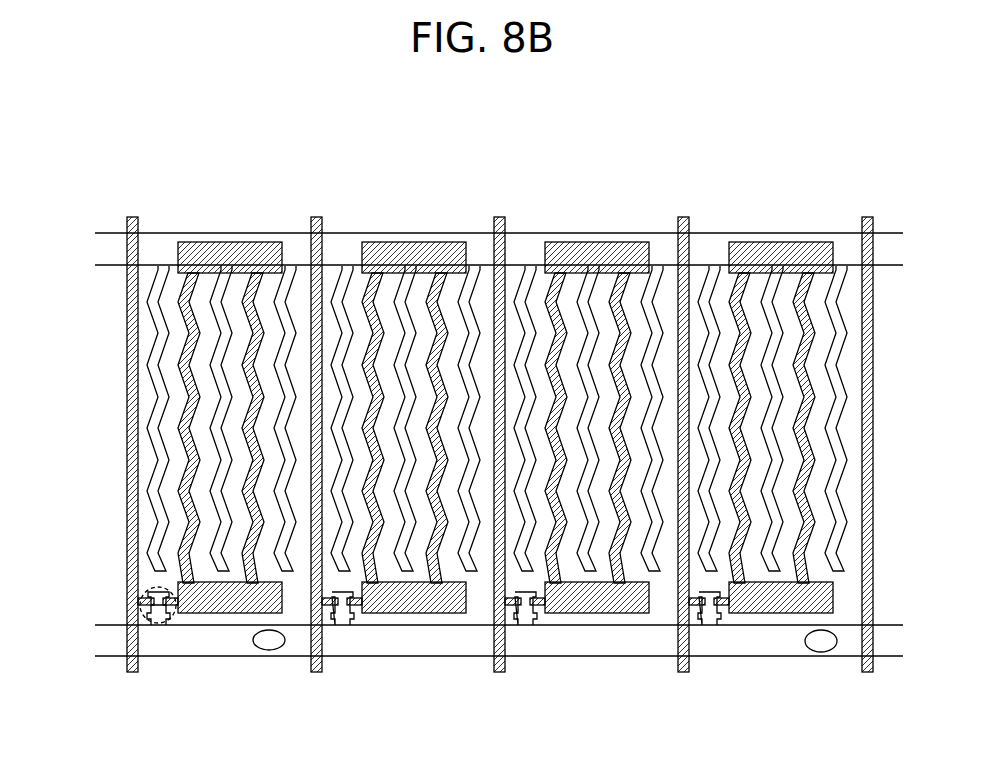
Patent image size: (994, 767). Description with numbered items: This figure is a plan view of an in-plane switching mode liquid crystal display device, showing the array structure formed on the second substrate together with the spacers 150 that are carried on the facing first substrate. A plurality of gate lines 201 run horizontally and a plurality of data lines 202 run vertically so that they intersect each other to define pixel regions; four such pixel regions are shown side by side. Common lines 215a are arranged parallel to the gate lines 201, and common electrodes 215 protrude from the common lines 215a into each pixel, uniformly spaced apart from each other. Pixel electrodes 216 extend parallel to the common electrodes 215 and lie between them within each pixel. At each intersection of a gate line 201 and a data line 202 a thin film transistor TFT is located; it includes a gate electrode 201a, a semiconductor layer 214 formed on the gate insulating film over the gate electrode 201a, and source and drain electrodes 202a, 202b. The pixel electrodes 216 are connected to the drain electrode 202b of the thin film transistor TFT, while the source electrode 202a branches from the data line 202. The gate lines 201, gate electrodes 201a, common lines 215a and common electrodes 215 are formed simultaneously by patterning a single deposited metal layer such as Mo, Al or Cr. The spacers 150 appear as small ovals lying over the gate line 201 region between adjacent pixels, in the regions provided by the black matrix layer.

The gate line 201 is at (357, 645).
The gate electrode 201a is at (163, 626).
The data line 202 is at (134, 224).
The source electrode 202a is at (150, 601).
The drain electrode 202b is at (172, 606).
The semiconductor layer 214 is at (148, 588).
The common electrode 215 is at (227, 332).
The common line 215a is at (290, 240).
The pixel electrode 216 is at (185, 378).
The spacer 150 is at (258, 650).
The thin film transistor TFT is at (153, 586).